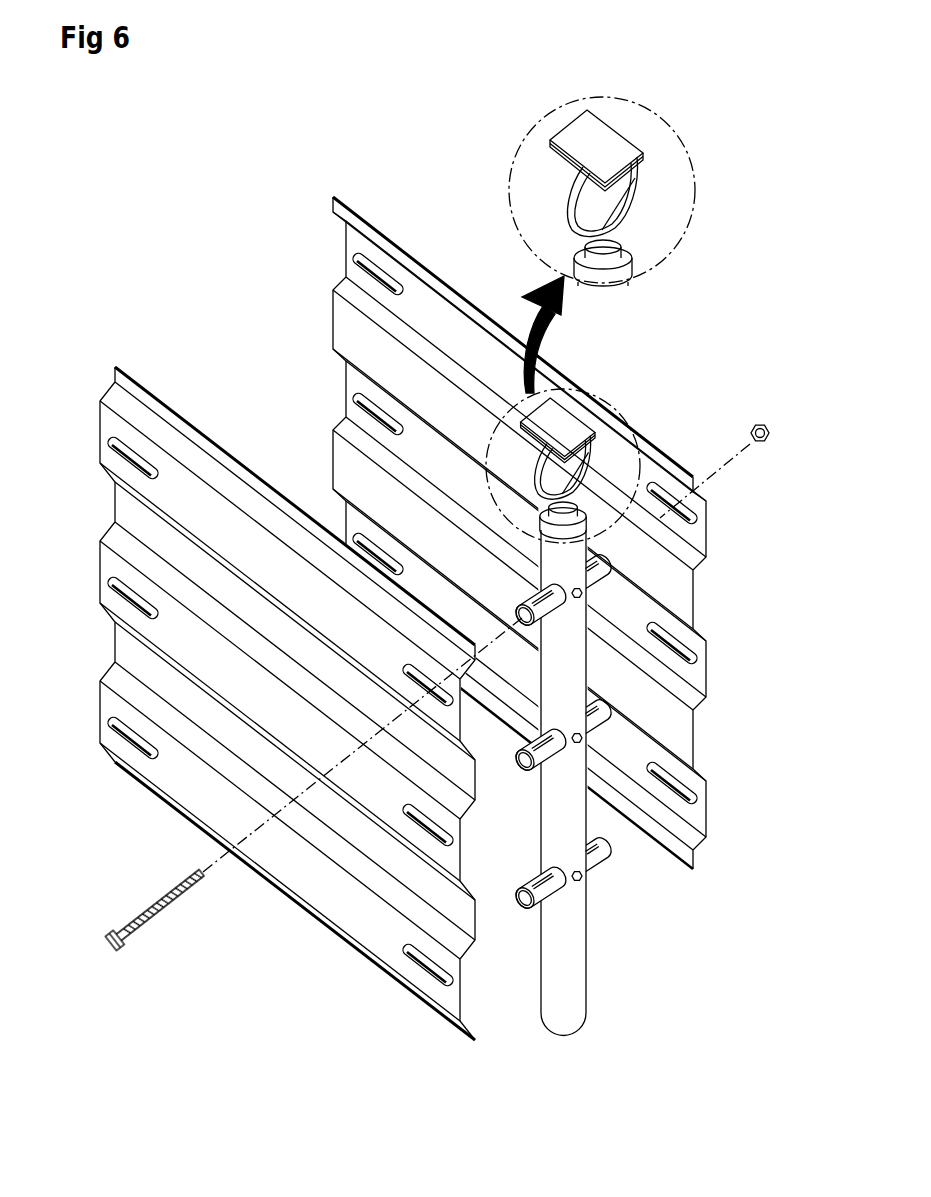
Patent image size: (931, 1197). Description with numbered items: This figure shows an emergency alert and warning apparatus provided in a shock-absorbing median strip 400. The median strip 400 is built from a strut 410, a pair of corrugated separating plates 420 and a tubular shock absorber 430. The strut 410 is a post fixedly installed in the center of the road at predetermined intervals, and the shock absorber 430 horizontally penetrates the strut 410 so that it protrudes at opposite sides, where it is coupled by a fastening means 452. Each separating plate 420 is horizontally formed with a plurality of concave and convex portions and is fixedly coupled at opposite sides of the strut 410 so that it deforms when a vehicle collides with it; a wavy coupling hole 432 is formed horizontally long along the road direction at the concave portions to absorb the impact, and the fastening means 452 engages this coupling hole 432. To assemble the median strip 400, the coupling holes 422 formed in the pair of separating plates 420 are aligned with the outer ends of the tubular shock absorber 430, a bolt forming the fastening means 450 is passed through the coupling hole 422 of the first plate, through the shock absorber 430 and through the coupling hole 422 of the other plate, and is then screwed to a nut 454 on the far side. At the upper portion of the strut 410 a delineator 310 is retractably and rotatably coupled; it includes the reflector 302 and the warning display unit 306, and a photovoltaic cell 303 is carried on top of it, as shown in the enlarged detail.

The median strip 400 is at (453, 568).
The strut 410 is at (578, 982).
The separating plate 420 is at (683, 732).
The coupling hole 422 is at (693, 520).
The shock absorber 430 is at (558, 603).
The wavy coupling hole 432 is at (546, 614).
The fastening means 450 is at (118, 948).
The fastening means 452 is at (582, 597).
The nut 454 is at (762, 446).
The delineator 310 is at (601, 320).
The photovoltaic cell 303 is at (618, 141).
The reflector 302 is at (613, 197).
The warning display unit 306 is at (588, 472).